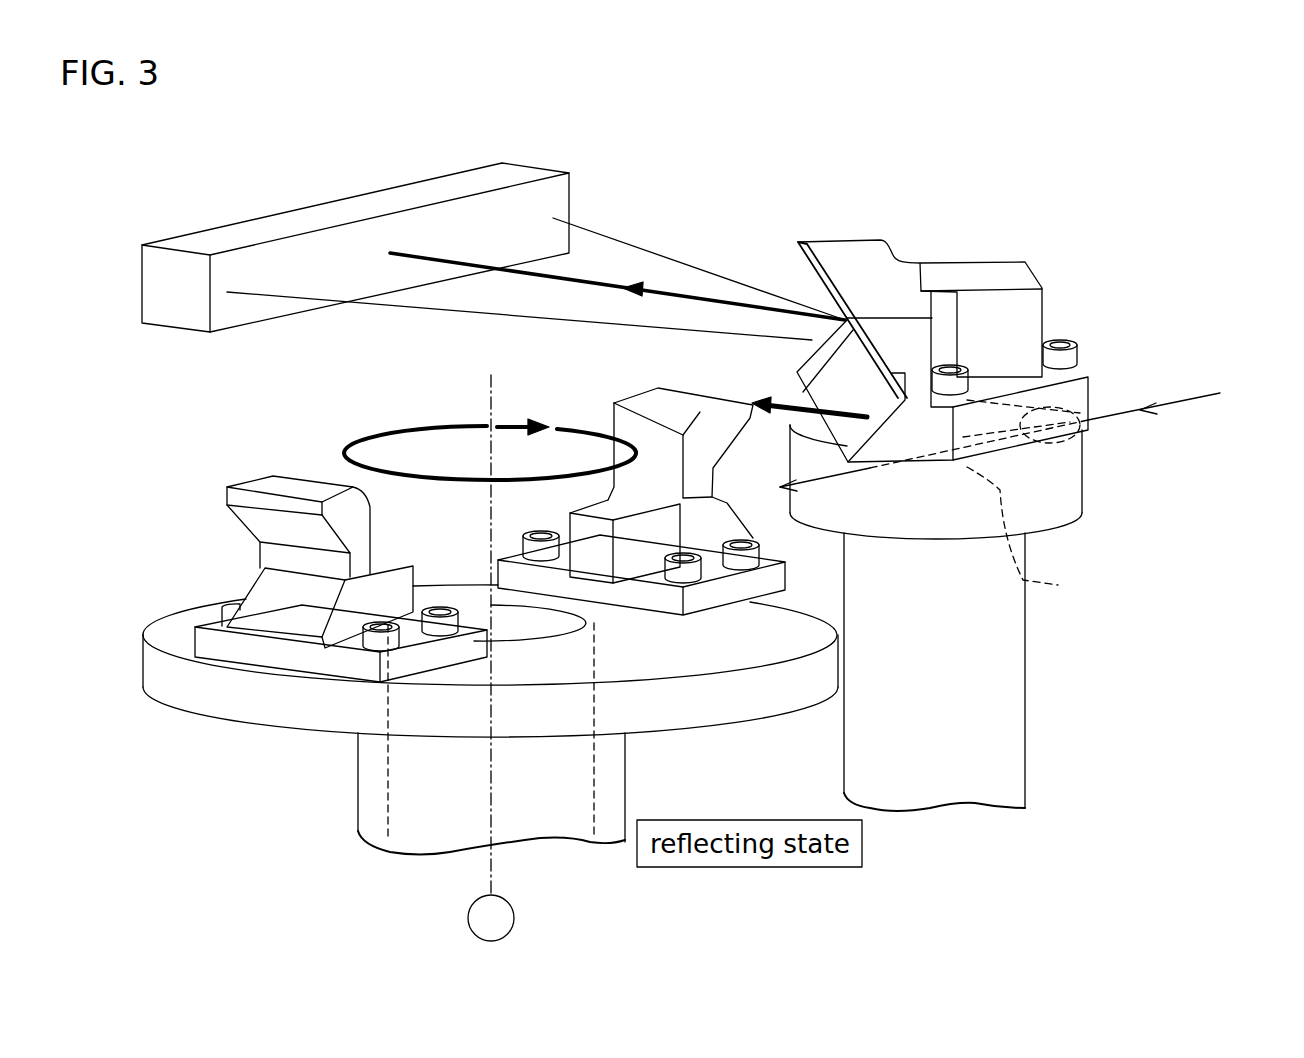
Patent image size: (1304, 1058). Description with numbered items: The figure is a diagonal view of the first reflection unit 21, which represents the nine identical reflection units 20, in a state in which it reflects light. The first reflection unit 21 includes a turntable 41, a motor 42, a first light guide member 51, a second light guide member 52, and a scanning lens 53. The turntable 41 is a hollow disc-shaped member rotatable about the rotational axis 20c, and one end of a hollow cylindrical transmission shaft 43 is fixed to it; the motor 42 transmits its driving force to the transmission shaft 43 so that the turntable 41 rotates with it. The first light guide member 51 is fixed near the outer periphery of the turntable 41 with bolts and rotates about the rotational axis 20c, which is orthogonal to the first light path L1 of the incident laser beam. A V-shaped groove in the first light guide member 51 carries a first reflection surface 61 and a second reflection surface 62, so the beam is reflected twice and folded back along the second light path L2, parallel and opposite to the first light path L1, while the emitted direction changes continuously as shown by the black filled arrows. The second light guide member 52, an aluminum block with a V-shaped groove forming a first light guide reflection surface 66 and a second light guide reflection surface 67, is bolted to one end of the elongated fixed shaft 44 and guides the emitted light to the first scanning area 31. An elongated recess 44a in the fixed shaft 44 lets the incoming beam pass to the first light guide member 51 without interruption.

The scanning lens 53 is at (540, 169).
The first scanning area 31 is at (62, 263).
The second light guide member 52 is at (908, 270).
The second light guide reflection surface 67 is at (830, 298).
The first light guide reflection surface 66 is at (820, 365).
The second light path L2 is at (748, 398).
The first light path L1 is at (1117, 420).
The recess 44a is at (1044, 507).
The fixed shaft 44 is at (878, 713).
The rotational axis 20c is at (487, 417).
The turntable 41 is at (661, 651).
The transmission shaft 43 is at (372, 780).
The motor 42 is at (515, 917).
The first reflection surface 61 is at (260, 587).
The second reflection surface 62 is at (260, 520).
The first light guide member 51 is at (307, 478).
The first reflection unit 21 is at (1098, 813).
The reflection unit 20 is at (1215, 928).